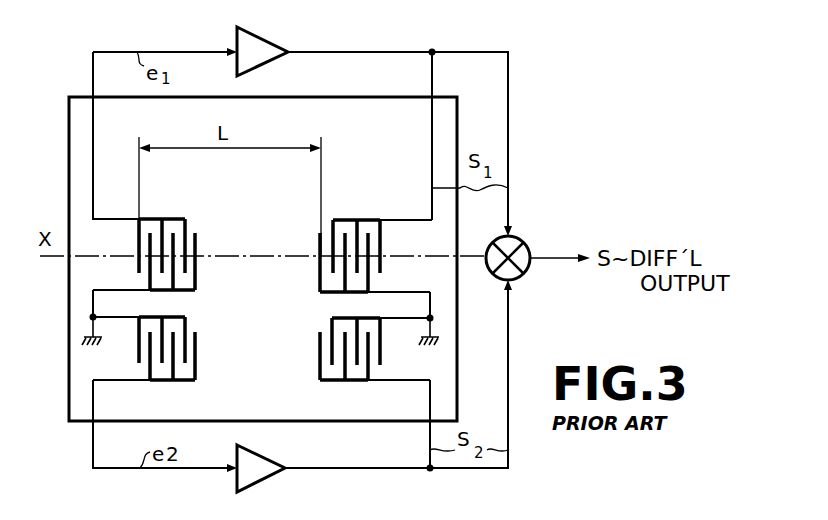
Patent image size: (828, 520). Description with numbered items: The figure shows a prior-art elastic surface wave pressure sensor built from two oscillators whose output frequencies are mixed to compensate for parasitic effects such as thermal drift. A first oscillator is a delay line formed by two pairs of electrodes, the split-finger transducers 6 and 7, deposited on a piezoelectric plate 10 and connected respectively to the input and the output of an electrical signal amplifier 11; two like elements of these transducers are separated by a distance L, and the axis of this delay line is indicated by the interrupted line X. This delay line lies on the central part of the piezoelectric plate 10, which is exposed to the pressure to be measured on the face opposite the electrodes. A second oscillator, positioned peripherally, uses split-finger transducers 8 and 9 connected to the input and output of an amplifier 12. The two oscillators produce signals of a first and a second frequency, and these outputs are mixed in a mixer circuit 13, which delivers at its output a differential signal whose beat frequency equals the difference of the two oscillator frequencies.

The split-finger transducer 6 is at (150, 219).
The split-finger transducer 7 is at (370, 220).
The split-finger transducer 8 is at (150, 380).
The split-finger transducer 9 is at (375, 380).
The piezoelectric plate 10 is at (80, 108).
The electrical signal amplifier 11 is at (262, 62).
The amplifier 12 is at (270, 460).
The mixer circuit 13 is at (522, 242).